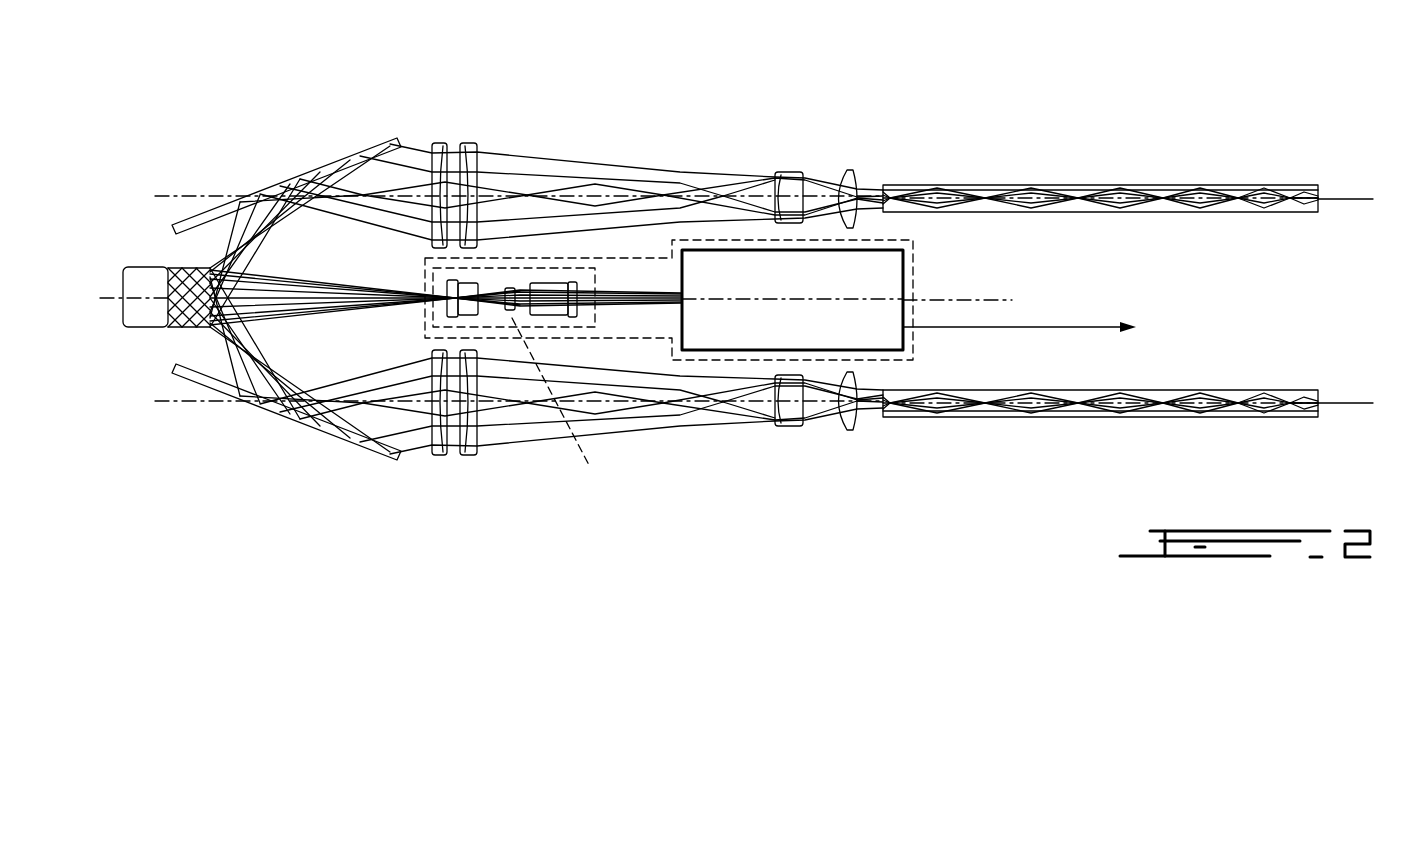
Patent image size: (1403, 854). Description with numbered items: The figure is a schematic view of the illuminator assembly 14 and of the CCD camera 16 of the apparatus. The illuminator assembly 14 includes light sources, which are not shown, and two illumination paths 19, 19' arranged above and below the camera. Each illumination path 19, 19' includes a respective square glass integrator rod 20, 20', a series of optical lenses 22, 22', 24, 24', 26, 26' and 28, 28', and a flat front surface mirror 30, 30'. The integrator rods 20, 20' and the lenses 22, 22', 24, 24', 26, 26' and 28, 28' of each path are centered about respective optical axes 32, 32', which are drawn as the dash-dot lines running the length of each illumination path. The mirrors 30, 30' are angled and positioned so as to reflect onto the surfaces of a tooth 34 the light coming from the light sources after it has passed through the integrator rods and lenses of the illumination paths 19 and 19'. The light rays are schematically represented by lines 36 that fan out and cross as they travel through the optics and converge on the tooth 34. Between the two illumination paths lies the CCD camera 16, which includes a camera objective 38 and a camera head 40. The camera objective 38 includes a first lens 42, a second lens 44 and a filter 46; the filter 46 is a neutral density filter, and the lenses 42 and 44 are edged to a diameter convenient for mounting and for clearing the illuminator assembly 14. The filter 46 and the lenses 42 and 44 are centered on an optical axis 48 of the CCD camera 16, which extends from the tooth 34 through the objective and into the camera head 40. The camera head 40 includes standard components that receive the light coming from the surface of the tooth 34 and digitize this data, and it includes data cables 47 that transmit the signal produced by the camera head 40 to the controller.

The illuminator assembly 14 is at (617, 140).
The CCD camera 16 is at (913, 360).
The illumination path 19 is at (1100, 113).
The illumination path 19' is at (1100, 486).
The square glass integrator rod 20 is at (1100, 163).
The square glass integrator rod 20' is at (1100, 440).
The optical lens 22 is at (876, 165).
The optical lens 22' is at (870, 440).
The optical lens 24 is at (772, 156).
The optical lens 24' is at (772, 445).
The optical lens 26 is at (490, 147).
The optical lens 26' is at (487, 441).
The optical lens 28 is at (422, 146).
The optical lens 28' is at (423, 440).
The flat front surface mirror 30 is at (286, 164).
The flat front surface mirror 30' is at (286, 439).
The optical axis 32 is at (764, 160).
The optical axis 32' is at (774, 431).
The tooth 34 is at (137, 267).
The light rays 36 is at (555, 152).
The camera objective 38 is at (558, 410).
The camera head 40 is at (883, 267).
The lens 42 is at (468, 316).
The lens 44 is at (575, 316).
The filter 46 is at (506, 288).
The data cables 47 is at (1085, 327).
The optical axis 48 is at (992, 300).